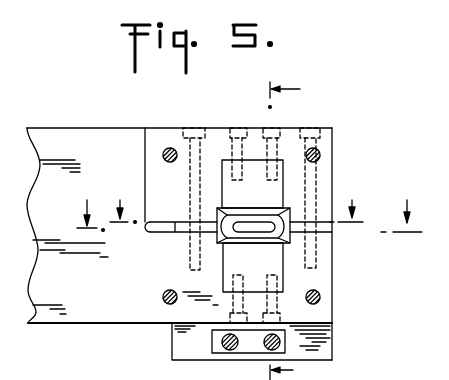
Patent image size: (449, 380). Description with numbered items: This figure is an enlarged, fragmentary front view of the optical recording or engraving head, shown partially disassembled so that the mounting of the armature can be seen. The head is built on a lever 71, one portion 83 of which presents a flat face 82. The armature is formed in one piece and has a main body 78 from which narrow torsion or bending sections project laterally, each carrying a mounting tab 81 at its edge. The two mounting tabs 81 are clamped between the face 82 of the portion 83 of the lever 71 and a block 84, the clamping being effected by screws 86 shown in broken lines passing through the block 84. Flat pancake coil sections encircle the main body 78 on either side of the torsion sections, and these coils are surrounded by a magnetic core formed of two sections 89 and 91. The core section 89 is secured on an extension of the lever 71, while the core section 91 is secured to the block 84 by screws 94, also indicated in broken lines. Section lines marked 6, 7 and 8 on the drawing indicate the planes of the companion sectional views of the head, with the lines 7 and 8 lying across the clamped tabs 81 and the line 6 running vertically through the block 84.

The lever 71 is at (62, 128).
The block 84 is at (325, 147).
The portion of lever 83 is at (323, 315).
The screws 86 is at (193, 128).
The screws 94 is at (271, 128).
The core section 91 is at (275, 183).
The main body of armature 78 is at (265, 232).
The core section 89 is at (267, 267).
The mounting tab 81 is at (325, 228).
The face 82 is at (145, 225).
The section line 6- 6 is at (293, 230).
The section line 7- 7 is at (236, 201).
The section line 8- 8 is at (249, 205).